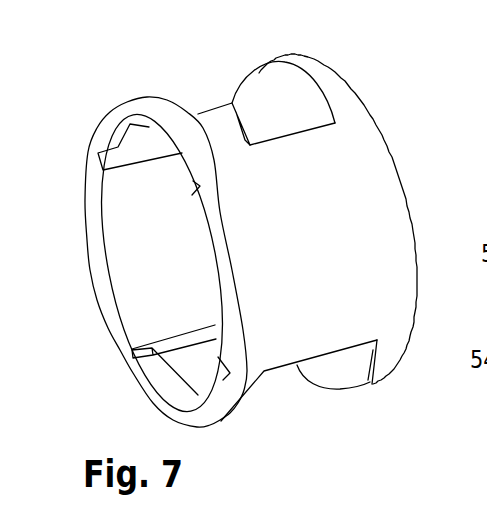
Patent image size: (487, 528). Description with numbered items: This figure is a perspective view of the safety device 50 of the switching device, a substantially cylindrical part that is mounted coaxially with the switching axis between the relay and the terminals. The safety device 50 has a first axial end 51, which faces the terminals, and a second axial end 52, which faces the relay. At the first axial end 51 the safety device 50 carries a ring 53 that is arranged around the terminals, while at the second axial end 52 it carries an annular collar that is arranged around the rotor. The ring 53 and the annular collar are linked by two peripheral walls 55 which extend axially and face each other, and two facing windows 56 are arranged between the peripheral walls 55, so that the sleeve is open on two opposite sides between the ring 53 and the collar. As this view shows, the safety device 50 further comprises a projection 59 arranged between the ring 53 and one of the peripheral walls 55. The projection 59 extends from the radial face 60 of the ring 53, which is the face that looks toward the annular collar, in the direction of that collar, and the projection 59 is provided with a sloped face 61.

The safety device 50 is at (108, 50).
The first axial end 51 is at (83, 236).
The second axial end 52 is at (405, 183).
The ring 53 is at (120, 328).
The peripheral walls 55 is at (152, 273).
The windows 56 is at (272, 99).
The projection 59 is at (207, 135).
The radial face 60 is at (200, 396).
The sloped face 61 is at (183, 105).